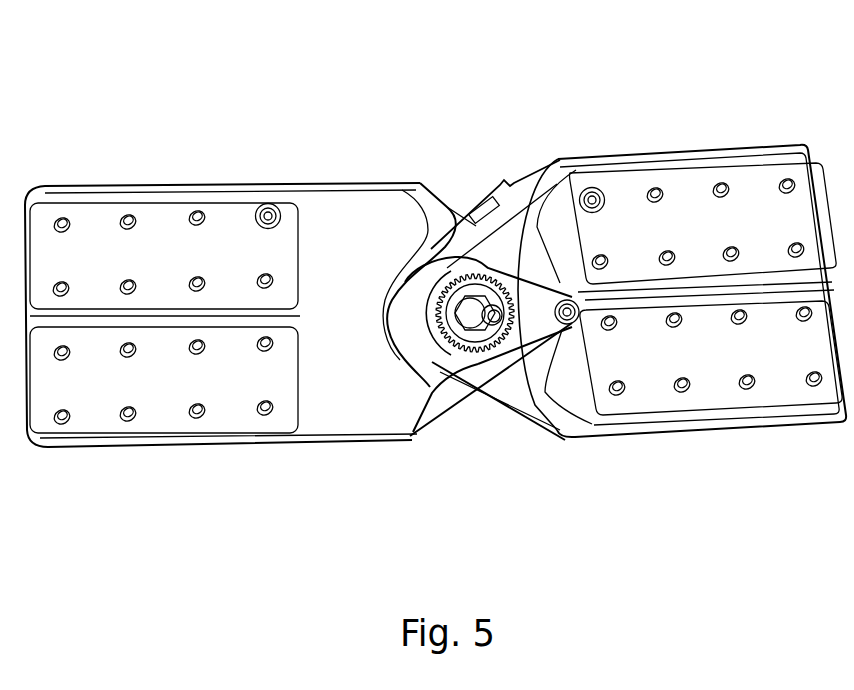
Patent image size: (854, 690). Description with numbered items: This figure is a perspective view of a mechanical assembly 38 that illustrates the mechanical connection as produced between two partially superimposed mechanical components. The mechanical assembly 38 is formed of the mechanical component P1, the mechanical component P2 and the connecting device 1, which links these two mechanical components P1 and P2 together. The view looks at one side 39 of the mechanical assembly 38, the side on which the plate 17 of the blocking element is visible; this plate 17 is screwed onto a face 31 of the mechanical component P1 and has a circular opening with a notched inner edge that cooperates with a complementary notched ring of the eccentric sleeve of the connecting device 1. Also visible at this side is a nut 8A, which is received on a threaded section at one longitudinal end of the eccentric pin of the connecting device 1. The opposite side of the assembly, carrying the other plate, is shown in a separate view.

The mechanical assembly 38 is at (420, 104).
The connecting device 1 is at (461, 244).
The plate 17 is at (517, 285).
The nut 8A is at (453, 332).
The side 39 is at (464, 376).
The face 31 is at (512, 372).
The mechanical component P1 is at (702, 423).
The mechanical component P2 is at (190, 445).